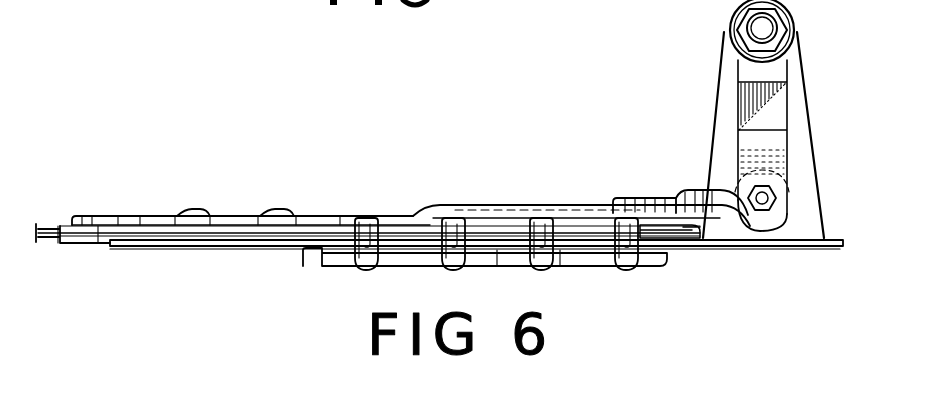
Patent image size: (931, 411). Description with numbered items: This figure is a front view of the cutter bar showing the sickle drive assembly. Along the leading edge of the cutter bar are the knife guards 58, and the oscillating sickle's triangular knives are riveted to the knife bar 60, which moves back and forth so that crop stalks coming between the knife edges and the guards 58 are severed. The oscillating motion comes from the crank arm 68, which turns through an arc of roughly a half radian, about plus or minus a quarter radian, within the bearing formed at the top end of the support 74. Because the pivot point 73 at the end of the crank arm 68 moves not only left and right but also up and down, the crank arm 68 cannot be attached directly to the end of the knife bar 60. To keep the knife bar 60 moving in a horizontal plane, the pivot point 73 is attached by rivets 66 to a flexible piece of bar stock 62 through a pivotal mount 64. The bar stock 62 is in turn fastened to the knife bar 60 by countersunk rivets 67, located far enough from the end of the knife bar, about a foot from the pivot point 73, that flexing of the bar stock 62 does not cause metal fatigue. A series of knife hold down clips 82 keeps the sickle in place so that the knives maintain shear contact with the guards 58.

The knife guards 58 is at (383, 262).
The knife bar 60 is at (676, 242).
The flexible piece of bar stock 62 is at (518, 208).
The pivotal mount 64 is at (704, 190).
The rivets 66 is at (643, 197).
The countersunk rivets 67 is at (118, 215).
The crank arm 68 is at (736, 107).
The pivot point 73 is at (777, 200).
The support 74 is at (814, 120).
The knife hold down clip 82 is at (222, 214).